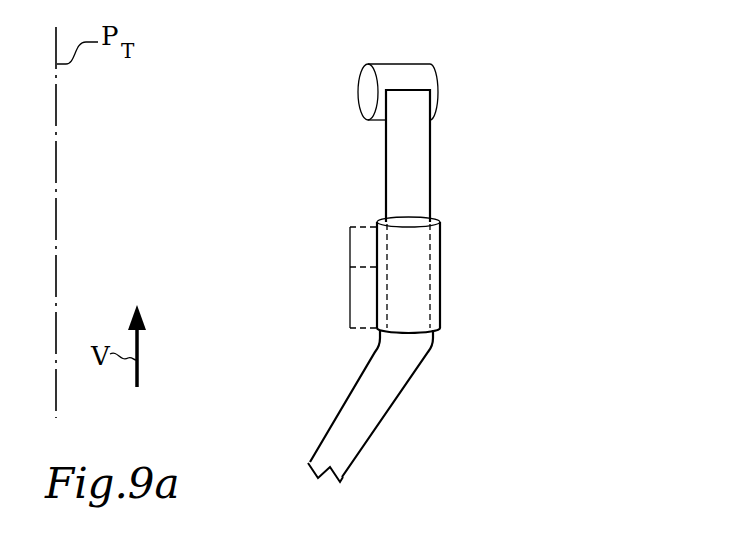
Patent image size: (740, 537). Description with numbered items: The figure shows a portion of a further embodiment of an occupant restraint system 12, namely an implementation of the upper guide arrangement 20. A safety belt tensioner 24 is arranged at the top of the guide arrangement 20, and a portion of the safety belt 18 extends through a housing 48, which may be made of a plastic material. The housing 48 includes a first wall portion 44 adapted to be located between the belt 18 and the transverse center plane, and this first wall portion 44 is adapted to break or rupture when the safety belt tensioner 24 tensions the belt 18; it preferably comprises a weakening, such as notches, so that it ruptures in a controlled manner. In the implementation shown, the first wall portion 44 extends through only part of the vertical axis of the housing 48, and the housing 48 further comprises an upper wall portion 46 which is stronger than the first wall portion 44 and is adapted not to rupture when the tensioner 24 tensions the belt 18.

The conveyance device 12 is at (530, 116).
The safety belt tensioner 24 is at (366, 87).
The upper guide arrangement 20 is at (449, 199).
The housing 48 is at (436, 298).
The upper wall portion 46 is at (344, 247).
The first wall portion 44 is at (344, 297).
The safety belt 18 is at (354, 428).